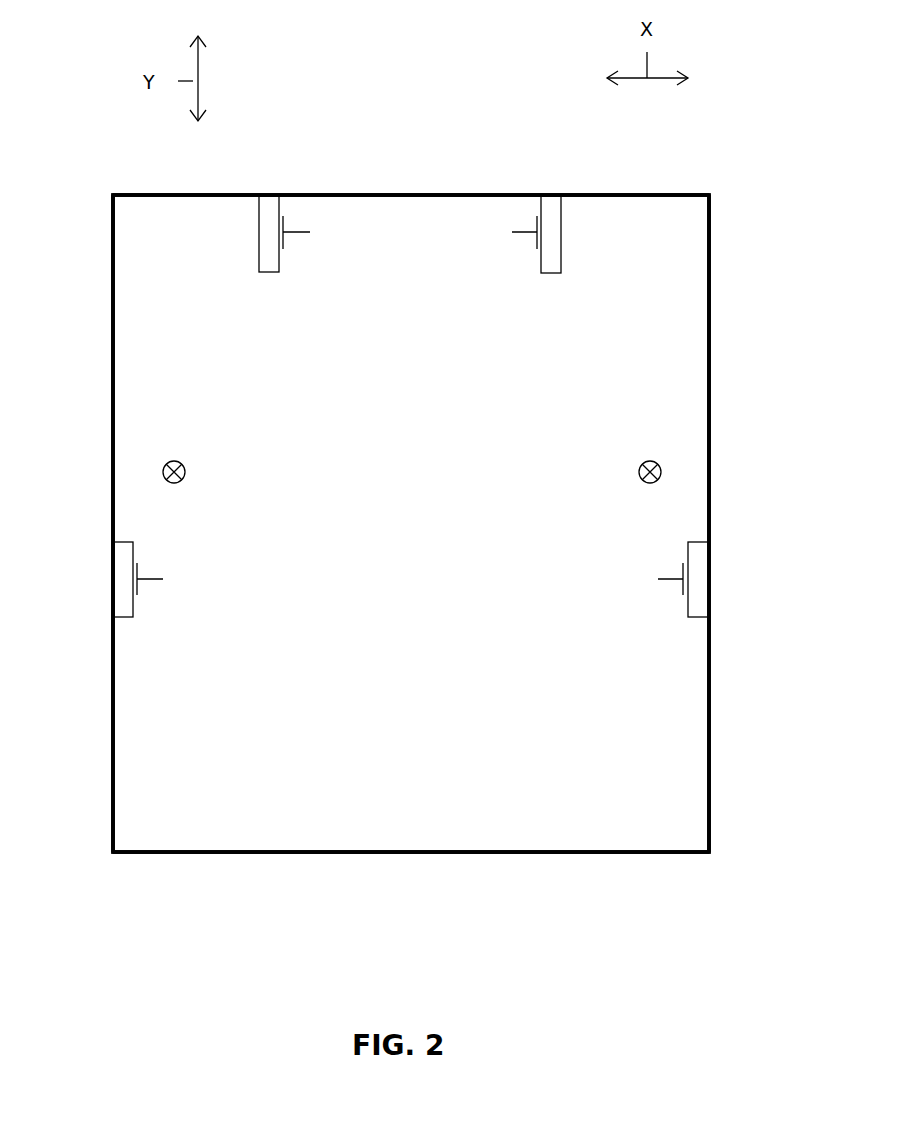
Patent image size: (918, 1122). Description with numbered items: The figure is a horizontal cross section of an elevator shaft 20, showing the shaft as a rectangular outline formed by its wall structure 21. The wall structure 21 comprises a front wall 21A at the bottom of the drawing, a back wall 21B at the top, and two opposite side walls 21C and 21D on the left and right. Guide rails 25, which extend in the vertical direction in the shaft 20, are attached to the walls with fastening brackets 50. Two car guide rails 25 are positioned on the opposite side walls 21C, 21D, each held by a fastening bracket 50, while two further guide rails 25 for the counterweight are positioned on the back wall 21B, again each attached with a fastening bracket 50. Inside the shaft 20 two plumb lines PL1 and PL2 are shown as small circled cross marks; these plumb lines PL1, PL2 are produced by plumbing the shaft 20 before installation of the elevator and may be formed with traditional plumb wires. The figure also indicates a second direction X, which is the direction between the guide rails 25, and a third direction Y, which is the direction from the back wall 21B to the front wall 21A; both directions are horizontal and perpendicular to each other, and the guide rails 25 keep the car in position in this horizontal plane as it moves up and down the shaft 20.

The elevator shaft 20 is at (662, 252).
The side wall structure 21 is at (727, 221).
The front wall 21A is at (422, 853).
The back wall 21B is at (414, 194).
The side wall 21C is at (112, 401).
The side wall 21D is at (710, 400).
The fastening bracket 50 is at (267, 195).
The guide rail 25 is at (300, 235).
The plumb line PL1 is at (185, 452).
The plumb line PL2 is at (630, 452).